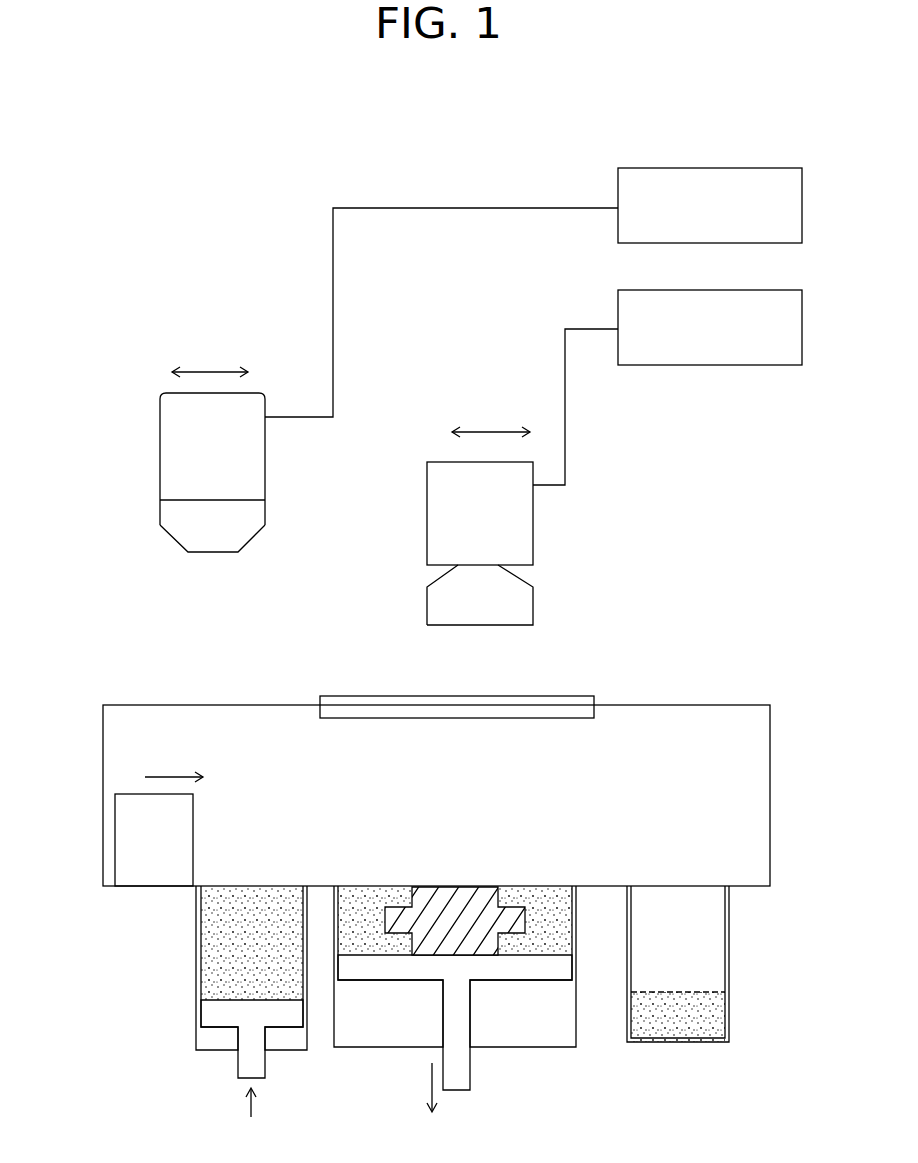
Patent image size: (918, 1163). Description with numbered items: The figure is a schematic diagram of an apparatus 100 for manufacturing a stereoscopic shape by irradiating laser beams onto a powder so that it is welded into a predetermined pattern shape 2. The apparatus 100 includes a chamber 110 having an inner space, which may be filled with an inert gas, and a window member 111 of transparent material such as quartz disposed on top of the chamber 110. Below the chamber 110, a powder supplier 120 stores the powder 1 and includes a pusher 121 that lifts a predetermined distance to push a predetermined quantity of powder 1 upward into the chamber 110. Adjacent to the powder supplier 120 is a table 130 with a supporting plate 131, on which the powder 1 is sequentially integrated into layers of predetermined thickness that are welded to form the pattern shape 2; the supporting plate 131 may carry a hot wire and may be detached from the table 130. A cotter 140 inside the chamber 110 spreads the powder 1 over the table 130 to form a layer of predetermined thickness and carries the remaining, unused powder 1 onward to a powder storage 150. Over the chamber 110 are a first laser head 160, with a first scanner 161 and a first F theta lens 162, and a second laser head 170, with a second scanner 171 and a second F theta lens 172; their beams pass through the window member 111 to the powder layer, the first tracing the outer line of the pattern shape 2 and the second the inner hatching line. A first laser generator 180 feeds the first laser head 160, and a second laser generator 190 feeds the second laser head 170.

The apparatus 100 is at (258, 246).
The chamber 110 is at (715, 705).
The window member 111 is at (590, 698).
The powder supplier 120 is at (196, 1040).
The pusher 121 is at (285, 1020).
The table 130 is at (522, 1047).
The supporting plate 131 is at (385, 963).
The cotter 140 is at (128, 847).
The powder storage 150 is at (729, 912).
The first laser head 160 is at (352, 513).
The first scanner 161 is at (427, 520).
The first F theta lens 162 is at (427, 607).
The second laser head 170 is at (108, 448).
The second scanner 171 is at (160, 456).
The second F theta lens 172 is at (173, 538).
The first laser generator 180 is at (722, 365).
The second laser generator 190 is at (730, 168).
The powder 1 is at (220, 917).
The pattern shape 2 is at (482, 908).